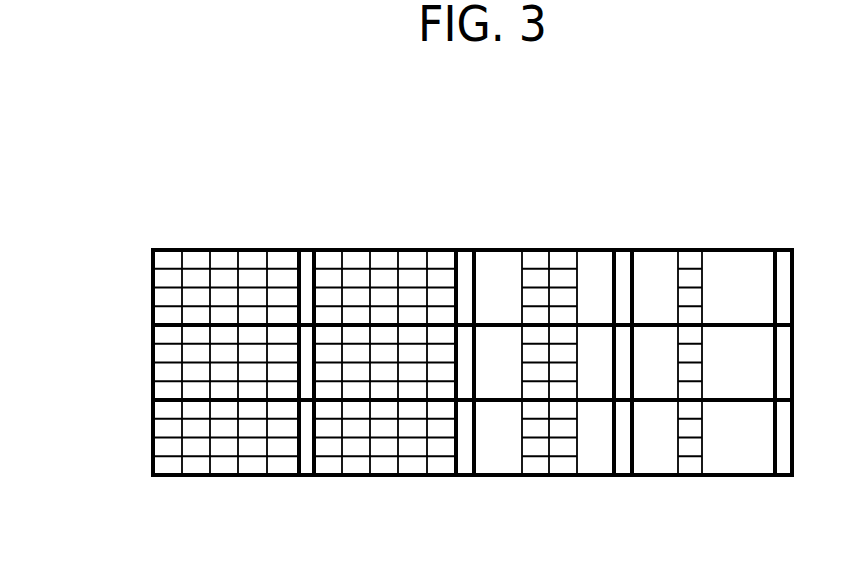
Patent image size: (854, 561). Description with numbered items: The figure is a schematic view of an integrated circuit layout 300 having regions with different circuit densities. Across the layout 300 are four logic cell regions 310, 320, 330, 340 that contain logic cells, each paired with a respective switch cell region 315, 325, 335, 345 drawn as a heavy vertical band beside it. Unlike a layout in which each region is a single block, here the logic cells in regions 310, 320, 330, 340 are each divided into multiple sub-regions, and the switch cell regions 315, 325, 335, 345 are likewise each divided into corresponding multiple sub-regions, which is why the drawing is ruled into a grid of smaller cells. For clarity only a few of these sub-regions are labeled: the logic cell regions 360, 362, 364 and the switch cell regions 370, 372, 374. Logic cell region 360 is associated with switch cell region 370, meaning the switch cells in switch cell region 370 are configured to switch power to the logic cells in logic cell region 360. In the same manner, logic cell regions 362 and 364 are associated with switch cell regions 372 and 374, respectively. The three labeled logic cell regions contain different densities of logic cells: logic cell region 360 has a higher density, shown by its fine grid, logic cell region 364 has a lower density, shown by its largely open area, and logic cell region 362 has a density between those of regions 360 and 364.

The layout 300 is at (93, 158).
The logic cell region 310 is at (223, 475).
The switch cell region 315 is at (303, 249).
The logic cell region 320 is at (383, 475).
The switch cell region 325 is at (458, 249).
The logic cell region 330 is at (546, 475).
The switch cell region 335 is at (620, 249).
The logic cell region 340 is at (704, 475).
The switch cell region 345 is at (780, 249).
The logic cell region 360 is at (178, 249).
The logic cell region 362 is at (500, 249).
The logic cell region 364 is at (660, 249).
The switch cell region 370 is at (294, 262).
The switch cell region 372 is at (600, 257).
The switch cell region 374 is at (765, 257).